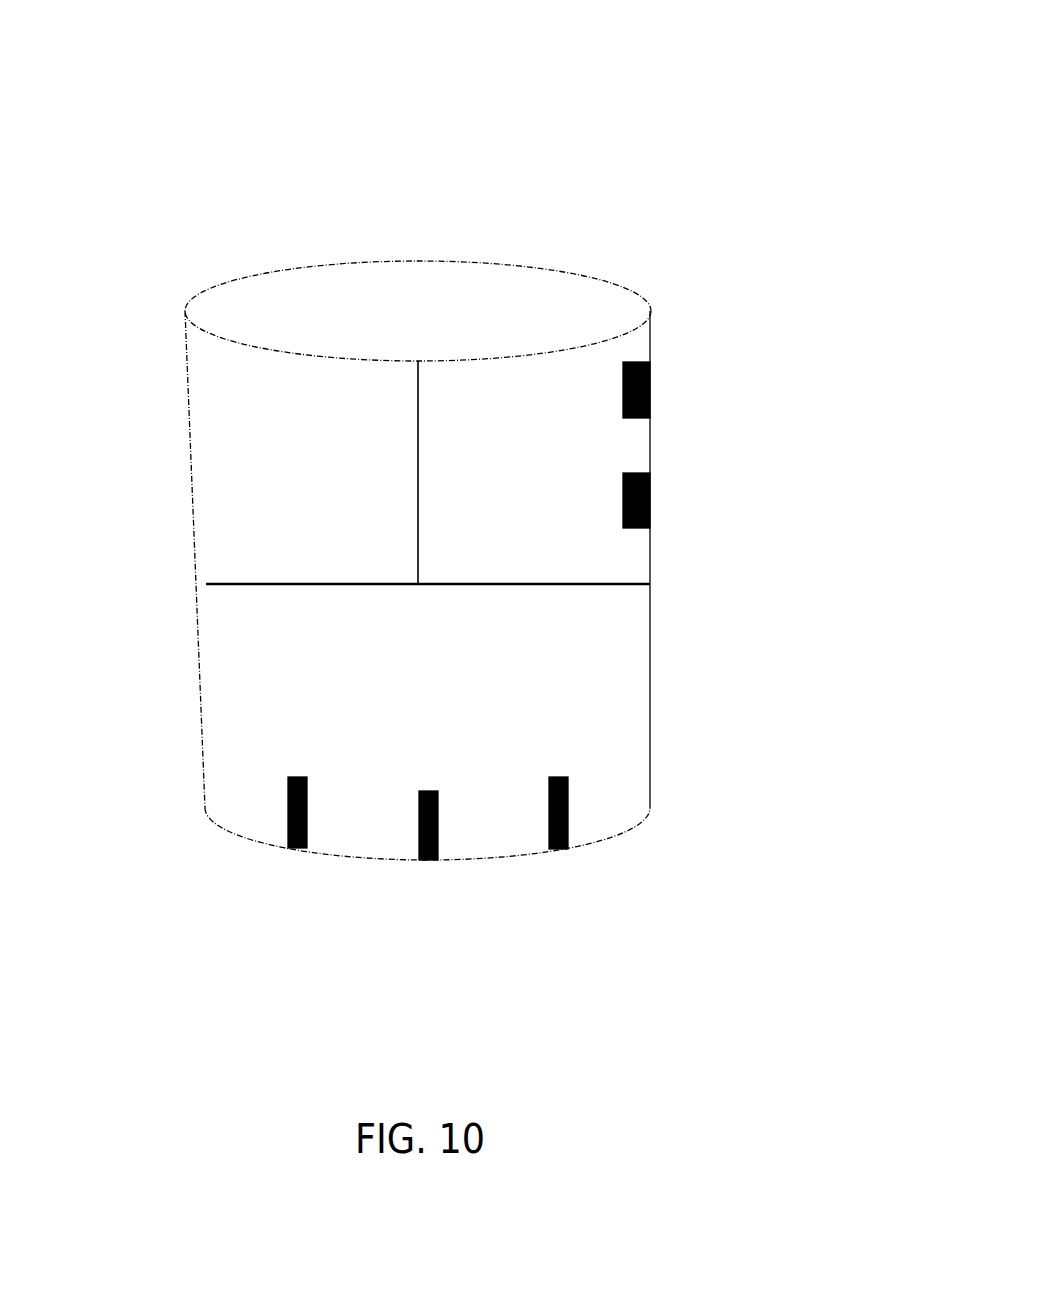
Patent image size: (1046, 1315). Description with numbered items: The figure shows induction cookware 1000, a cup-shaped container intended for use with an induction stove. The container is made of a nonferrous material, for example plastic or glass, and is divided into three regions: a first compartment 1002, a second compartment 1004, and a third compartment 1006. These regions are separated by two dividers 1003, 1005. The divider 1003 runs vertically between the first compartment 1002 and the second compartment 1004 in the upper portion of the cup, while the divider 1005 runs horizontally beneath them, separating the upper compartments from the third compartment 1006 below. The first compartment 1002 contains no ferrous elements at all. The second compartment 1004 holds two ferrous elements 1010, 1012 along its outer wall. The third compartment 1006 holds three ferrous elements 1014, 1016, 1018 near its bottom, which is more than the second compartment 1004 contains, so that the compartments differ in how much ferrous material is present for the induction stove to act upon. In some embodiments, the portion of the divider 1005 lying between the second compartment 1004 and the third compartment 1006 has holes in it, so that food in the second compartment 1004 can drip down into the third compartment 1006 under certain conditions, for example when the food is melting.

The induction cookware 1000 is at (390, 123).
The first compartment 1002 is at (240, 483).
The divider 1003 is at (418, 510).
The second compartment 1004 is at (530, 538).
The divider 1005 is at (380, 576).
The third compartment 1006 is at (252, 734).
The ferrous element 1010 is at (651, 388).
The ferrous element 1012 is at (651, 500).
The ferrous element 1014 is at (292, 848).
The ferrous element 1016 is at (430, 860).
The ferrous element 1018 is at (562, 849).